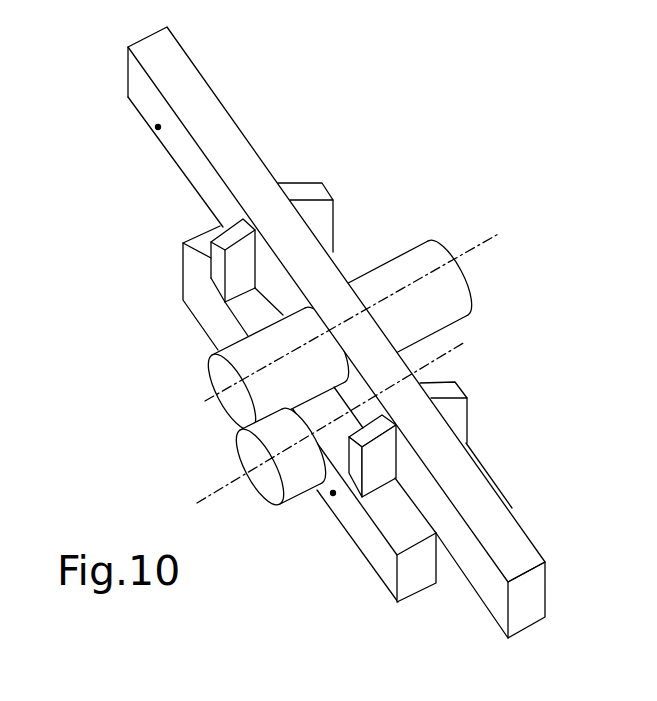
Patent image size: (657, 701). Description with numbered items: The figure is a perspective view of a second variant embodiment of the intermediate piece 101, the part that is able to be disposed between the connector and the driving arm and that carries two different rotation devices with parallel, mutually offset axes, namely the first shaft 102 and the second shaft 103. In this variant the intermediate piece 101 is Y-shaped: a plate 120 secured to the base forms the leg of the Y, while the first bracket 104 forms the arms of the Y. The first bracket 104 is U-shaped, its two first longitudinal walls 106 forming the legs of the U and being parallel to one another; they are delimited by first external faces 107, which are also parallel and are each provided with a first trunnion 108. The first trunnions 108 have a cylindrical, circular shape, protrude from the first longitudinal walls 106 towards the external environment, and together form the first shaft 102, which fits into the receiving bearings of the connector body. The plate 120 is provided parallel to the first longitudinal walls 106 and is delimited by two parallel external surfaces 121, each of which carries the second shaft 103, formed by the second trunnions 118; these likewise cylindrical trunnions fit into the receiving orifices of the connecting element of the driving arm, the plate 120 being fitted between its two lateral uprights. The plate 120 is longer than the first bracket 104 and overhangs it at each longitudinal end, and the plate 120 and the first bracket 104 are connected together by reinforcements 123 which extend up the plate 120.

The intermediate piece 101 is at (326, 349).
The first shaft 102 is at (198, 504).
The second shaft 103 is at (478, 256).
The first bracket 104 is at (336, 574).
The first longitudinal walls 106 is at (495, 477).
The first external faces 107 is at (333, 493).
The first trunnions 108 is at (243, 468).
The second trunnions 118 is at (213, 386).
The plate 120 is at (227, 108).
The external surfaces 121 is at (158, 127).
The reinforcements 123 is at (338, 183).